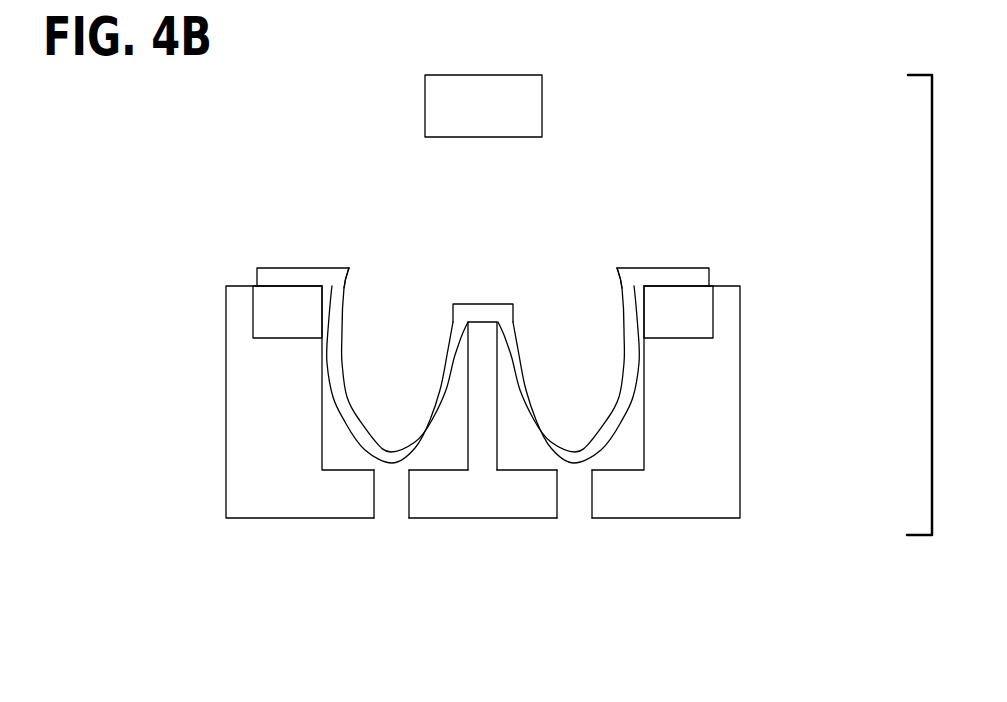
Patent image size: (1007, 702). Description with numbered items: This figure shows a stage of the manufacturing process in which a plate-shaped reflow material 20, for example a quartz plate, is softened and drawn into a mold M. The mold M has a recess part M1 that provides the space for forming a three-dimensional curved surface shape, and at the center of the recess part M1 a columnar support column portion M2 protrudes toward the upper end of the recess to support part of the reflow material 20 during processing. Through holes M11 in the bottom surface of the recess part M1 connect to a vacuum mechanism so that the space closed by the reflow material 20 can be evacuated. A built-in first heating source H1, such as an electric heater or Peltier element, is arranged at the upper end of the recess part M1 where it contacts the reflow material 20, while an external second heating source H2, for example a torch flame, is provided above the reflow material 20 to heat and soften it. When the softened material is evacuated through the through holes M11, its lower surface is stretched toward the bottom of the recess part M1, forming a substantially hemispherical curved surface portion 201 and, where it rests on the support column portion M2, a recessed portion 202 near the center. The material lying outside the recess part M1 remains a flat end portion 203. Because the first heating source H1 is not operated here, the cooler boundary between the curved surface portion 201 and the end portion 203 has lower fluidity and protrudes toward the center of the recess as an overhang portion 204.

The reflow material 20 is at (515, 318).
The curved surface portion 201 is at (334, 345).
The recessed portion 202 is at (484, 310).
The end portion 203 is at (293, 276).
The overhang portion 204 is at (338, 278).
The first heating source H1 is at (280, 314).
The second heating source H2 is at (527, 105).
The mold M is at (724, 402).
The recess part M1 is at (335, 402).
The support column portion M2 is at (482, 392).
The through hole M11 is at (375, 498).